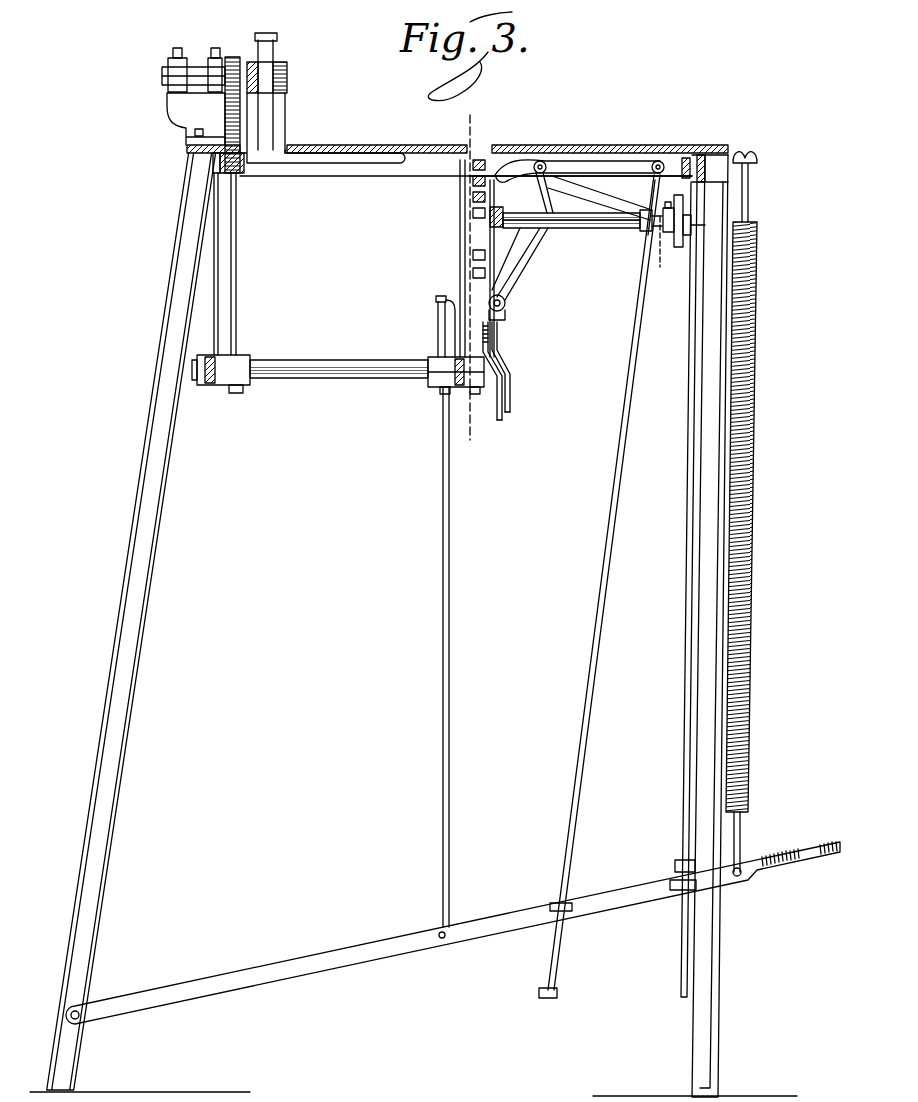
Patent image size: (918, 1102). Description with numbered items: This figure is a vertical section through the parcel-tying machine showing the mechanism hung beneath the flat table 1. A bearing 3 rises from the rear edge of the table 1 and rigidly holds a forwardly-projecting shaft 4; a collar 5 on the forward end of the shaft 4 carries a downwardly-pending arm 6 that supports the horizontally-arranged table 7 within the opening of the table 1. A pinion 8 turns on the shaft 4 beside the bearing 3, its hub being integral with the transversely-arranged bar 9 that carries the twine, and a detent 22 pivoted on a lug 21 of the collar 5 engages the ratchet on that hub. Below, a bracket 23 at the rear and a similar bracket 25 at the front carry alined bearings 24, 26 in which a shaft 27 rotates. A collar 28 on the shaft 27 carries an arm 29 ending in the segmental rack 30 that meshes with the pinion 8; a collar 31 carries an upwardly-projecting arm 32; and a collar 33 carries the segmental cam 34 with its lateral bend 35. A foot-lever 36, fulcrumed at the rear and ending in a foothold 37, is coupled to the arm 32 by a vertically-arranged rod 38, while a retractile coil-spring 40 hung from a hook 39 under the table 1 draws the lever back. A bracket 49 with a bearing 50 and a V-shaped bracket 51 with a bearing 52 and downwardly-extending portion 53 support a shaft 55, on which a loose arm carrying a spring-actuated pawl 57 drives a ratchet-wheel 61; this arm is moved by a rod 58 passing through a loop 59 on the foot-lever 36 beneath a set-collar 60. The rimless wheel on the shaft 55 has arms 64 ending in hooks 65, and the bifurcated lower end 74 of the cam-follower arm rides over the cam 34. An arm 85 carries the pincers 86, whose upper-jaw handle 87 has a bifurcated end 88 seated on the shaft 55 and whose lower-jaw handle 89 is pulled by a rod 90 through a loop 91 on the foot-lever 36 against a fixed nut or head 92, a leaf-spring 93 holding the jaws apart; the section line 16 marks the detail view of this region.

The flat table 1 is at (598, 150).
The bearing 3 is at (196, 119).
The forwardly-projecting shaft 4 is at (162, 75).
The collar 5 is at (290, 78).
The downwardly-pending arm 6 is at (277, 118).
The horizontally-arranged table 7 is at (385, 145).
The pinion 8 is at (234, 57).
The transversely-arranged bar 9 is at (256, 128).
The section line 16 16 is at (673, 224).
The lug 21 is at (278, 52).
The detent 22 is at (269, 21).
The bracket 23 is at (205, 300).
The bearing 24 is at (213, 395).
The bracket 25 is at (460, 247).
The bearing 26 is at (460, 385).
The shaft 27 is at (335, 366).
The collar 28 is at (250, 352).
The arm 29 is at (238, 240).
The segmental rack 30 is at (244, 173).
The collar 31 is at (428, 388).
The upwardly-projecting arm 32 is at (437, 335).
The collar 33 is at (494, 415).
The segmental cam 34 is at (500, 340).
The lateral bend 35 is at (508, 370).
The foot-lever 36 is at (348, 946).
The foothold 37 is at (797, 845).
The vertically-arranged rod 38 is at (450, 596).
The hook 39 is at (758, 160).
The retractile coil-spring 40 is at (752, 357).
The bracket 49 is at (694, 200).
The bearing 50 is at (690, 228).
The V-shaped bracket 51 is at (563, 193).
The bearing 52 is at (523, 240).
The downwardly-extending portion 53 is at (508, 293).
The shaft 55 is at (582, 232).
The spring-actuated pawl 57 is at (685, 158).
The vertically-arranged rod 58 is at (683, 758).
The loop 59 is at (672, 891).
The set-collar 60 is at (662, 859).
The ratchet-wheel 61 is at (652, 262).
The arms 64 is at (489, 208).
The hooks 65 is at (478, 162).
The bifurcated lower end 74 is at (506, 312).
The arm 85 is at (571, 234).
The pincers 86 is at (526, 160).
The handle 87 is at (600, 198).
The bifurcated end 88 is at (638, 232).
The handle 89 is at (643, 163).
The rod 90 is at (622, 470).
The loop 91 is at (552, 905).
The fixed nut or head 92 is at (549, 1000).
The leaf-spring 93 is at (592, 153).